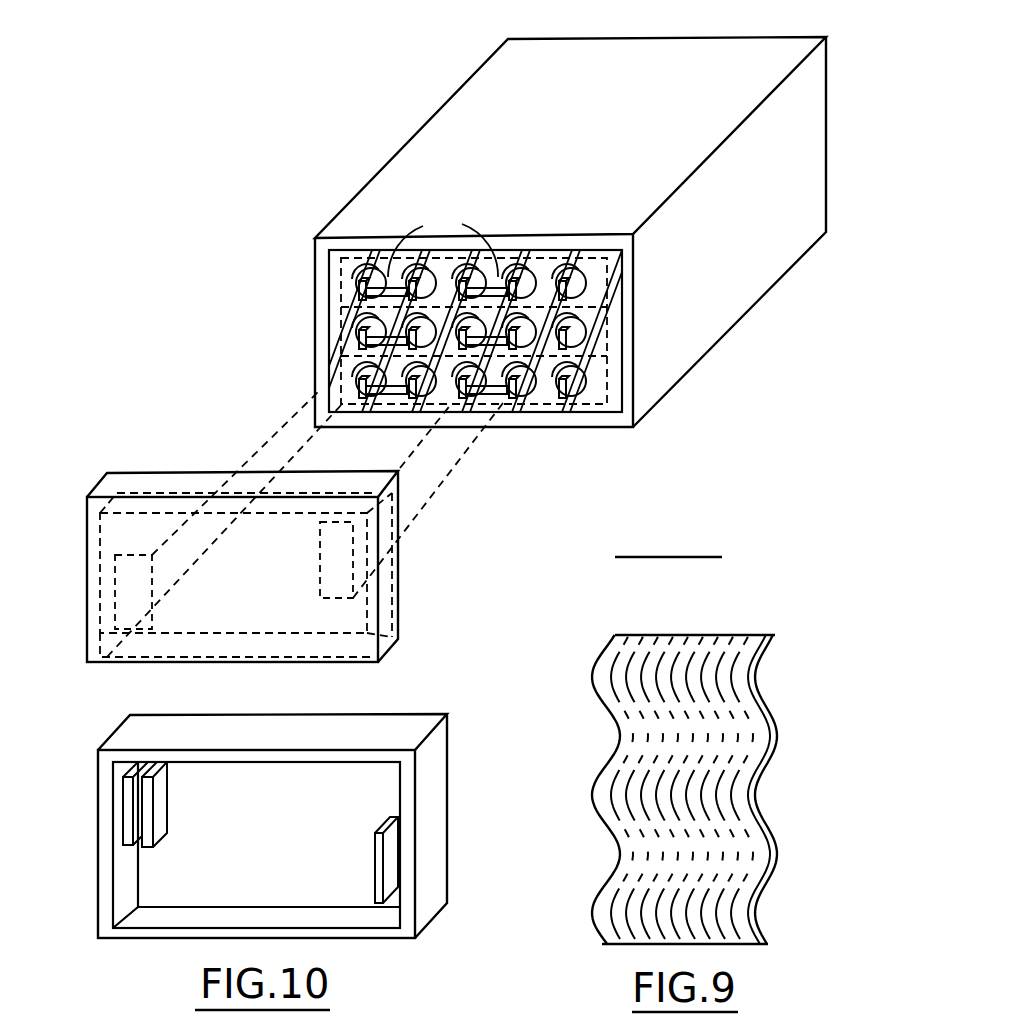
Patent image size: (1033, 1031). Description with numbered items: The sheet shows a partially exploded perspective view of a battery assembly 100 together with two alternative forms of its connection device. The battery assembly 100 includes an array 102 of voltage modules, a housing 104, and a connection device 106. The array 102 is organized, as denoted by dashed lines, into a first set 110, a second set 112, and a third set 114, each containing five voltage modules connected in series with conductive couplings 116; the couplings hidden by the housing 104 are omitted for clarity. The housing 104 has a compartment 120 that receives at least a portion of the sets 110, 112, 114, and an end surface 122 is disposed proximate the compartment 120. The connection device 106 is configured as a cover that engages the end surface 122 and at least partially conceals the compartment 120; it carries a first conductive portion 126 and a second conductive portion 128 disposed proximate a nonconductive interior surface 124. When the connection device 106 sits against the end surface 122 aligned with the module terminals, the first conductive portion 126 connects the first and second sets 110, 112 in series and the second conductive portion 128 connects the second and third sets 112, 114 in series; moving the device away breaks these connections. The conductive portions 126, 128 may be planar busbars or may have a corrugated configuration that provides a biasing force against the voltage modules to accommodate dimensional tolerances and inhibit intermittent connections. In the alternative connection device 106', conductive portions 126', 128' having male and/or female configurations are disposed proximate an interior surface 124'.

In FIG. 8, the battery assembly 100 is at (262, 152).
In FIG. 8, the array of voltage modules 102 is at (232, 262).
In FIG. 8, the housing 104 is at (427, 125).
In FIG. 8, the connection device 106 is at (260, 527).
In FIG. 8, the first set 110 is at (312, 281).
In FIG. 8, the second set 112 is at (312, 335).
In FIG. 8, the third set 114 is at (312, 385).
In FIG. 8, the conductive coupling 116 is at (443, 242).
In FIG. 8, the compartment 120 is at (598, 407).
In FIG. 8, the end surface 122 is at (527, 428).
In FIG. 8, the nonconductive interior surface 124 is at (221, 554).
In FIG. 8, the first conductive portion 126 is at (393, 563).
In FIG. 9, the first conductive portion 126 is at (703, 766).
In FIG. 8, the second conductive portion 128 is at (92, 592).
In FIG. 9, the second conductive portion 128 is at (703, 766).
In FIG. 10, the connection device 106' is at (262, 814).
In FIG. 10, the interior surface 124' is at (256, 845).
In FIG. 10, the conductive portion 126' is at (92, 804).
In FIG. 10, the conductive portion 128' is at (441, 860).